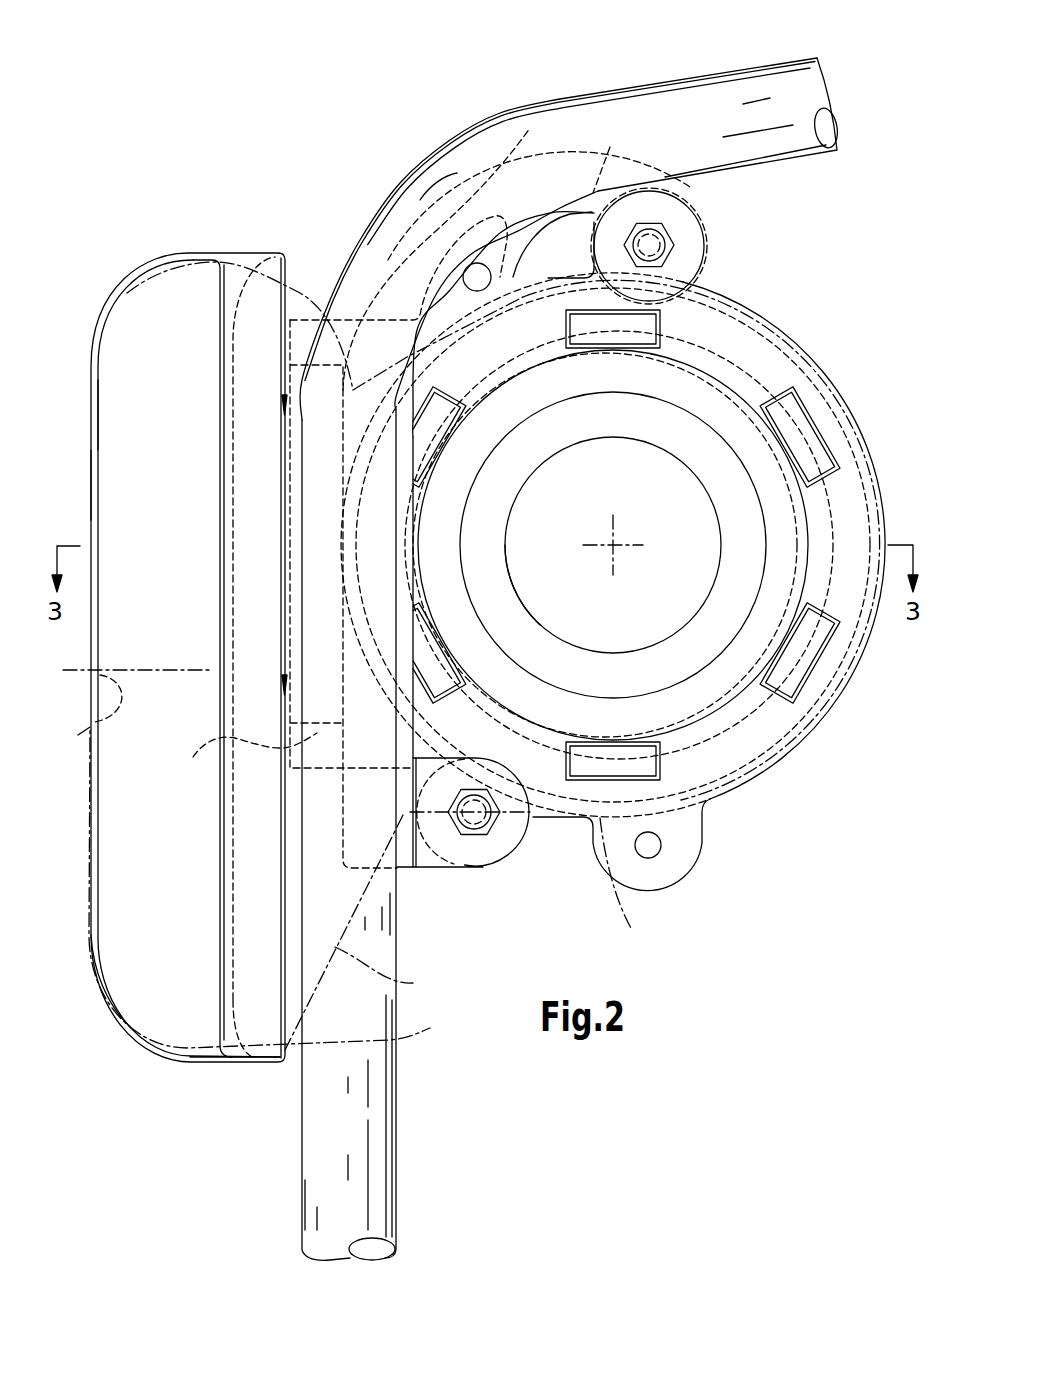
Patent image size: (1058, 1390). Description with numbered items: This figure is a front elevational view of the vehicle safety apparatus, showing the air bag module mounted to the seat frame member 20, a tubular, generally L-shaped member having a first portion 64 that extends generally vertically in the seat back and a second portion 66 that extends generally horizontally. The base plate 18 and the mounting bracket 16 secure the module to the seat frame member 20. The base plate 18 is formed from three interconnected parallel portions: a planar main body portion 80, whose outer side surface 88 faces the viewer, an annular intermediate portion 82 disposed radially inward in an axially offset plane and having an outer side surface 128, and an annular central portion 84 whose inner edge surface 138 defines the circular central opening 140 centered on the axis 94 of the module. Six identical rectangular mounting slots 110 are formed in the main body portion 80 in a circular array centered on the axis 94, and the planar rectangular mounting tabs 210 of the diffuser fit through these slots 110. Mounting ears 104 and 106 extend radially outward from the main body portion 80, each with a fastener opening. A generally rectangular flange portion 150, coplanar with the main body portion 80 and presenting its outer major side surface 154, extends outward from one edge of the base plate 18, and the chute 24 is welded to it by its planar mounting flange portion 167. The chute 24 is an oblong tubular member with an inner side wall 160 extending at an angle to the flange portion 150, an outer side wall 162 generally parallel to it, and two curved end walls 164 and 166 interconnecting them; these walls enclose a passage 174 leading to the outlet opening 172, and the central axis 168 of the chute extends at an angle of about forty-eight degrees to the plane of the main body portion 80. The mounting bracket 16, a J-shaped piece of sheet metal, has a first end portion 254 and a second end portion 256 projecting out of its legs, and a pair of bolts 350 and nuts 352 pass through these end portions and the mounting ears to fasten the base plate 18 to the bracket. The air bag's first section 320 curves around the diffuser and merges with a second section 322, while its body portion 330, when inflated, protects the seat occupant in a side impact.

The mounting bracket 16 is at (505, 152).
The seat frame member 20 is at (762, 50).
The second portion 66 is at (837, 100).
The first portion 64 is at (357, 1148).
The base plate 18 is at (805, 332).
The main body portion 80 is at (730, 767).
The outer side surface 88 is at (752, 750).
The mounting ear 106 is at (677, 870).
The first section 320 is at (639, 886).
The second end portion 256 is at (700, 198).
The mounting ear 104 is at (525, 280).
The first end portion 254 is at (427, 853).
The bolt 350 is at (651, 245).
The nut 352 is at (667, 252).
The intermediate portion 82 is at (828, 524).
The outer side surface 128 is at (780, 498).
The central portion 84 is at (740, 475).
The inner edge surface 138 is at (510, 522).
The central opening 140 is at (517, 592).
The axis 94 is at (613, 545).
The mounting slot 110 is at (440, 380).
The mounting tab 210 is at (420, 448).
The outer major side surface 154 is at (305, 328).
The flange portion 150 is at (341, 318).
The chute 24 is at (92, 270).
The curved end wall 164 is at (235, 252).
The outlet opening 172 is at (127, 415).
The passage 174 is at (137, 475).
The inner side wall 160 is at (243, 837).
The outer side wall 162 is at (132, 935).
The curved end wall 166 is at (247, 1062).
The central axis 168 is at (155, 672).
The mounting flange portion 167 is at (235, 758).
The body portion 330 is at (254, 888).
The second section 322 is at (402, 969).